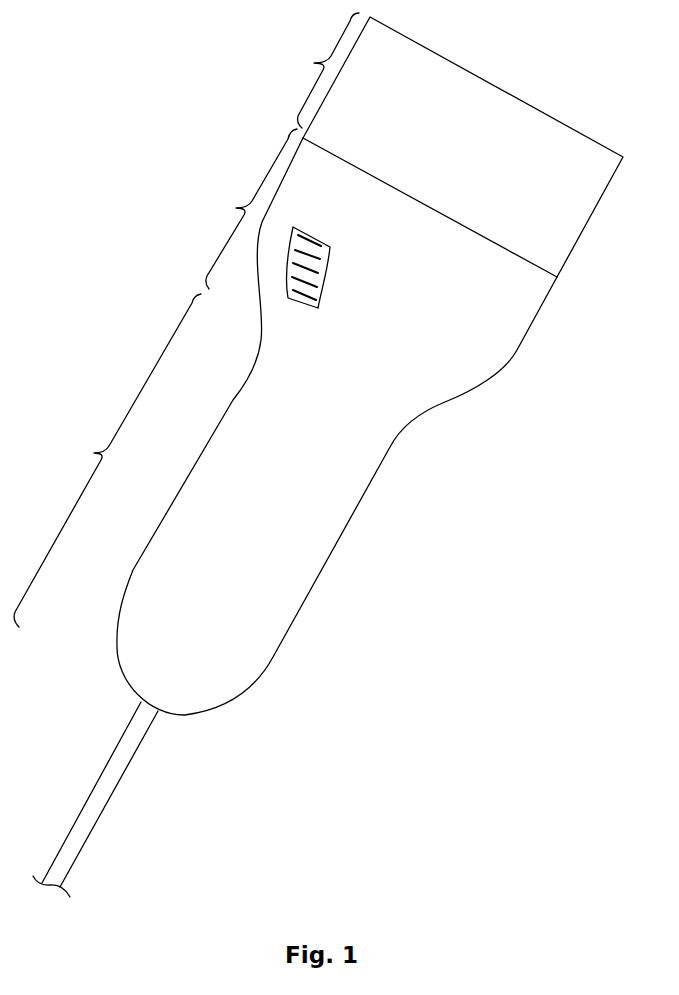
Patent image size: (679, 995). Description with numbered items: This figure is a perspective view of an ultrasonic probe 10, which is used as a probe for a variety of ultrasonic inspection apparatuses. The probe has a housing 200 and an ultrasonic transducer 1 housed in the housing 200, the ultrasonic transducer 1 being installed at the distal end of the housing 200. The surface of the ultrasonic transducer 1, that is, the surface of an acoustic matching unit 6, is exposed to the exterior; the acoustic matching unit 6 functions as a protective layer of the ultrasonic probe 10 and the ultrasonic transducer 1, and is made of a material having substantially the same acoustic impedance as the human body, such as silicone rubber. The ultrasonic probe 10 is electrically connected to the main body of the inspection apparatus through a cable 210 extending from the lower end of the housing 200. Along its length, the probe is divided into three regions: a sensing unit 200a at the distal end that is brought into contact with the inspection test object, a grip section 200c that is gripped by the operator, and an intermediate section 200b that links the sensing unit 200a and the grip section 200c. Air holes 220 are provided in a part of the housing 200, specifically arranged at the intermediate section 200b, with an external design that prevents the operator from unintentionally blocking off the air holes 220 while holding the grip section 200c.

The ultrasonic probe 10 is at (550, 57).
The ultrasonic transducer 1 is at (563, 245).
The acoustic matching unit 6 is at (597, 185).
The housing 200 is at (350, 493).
The sensing unit 200a is at (305, 70).
The intermediate section 200b is at (235, 209).
The grip section 200c is at (107, 460).
The cable 210 is at (115, 773).
The air holes 220 is at (318, 263).